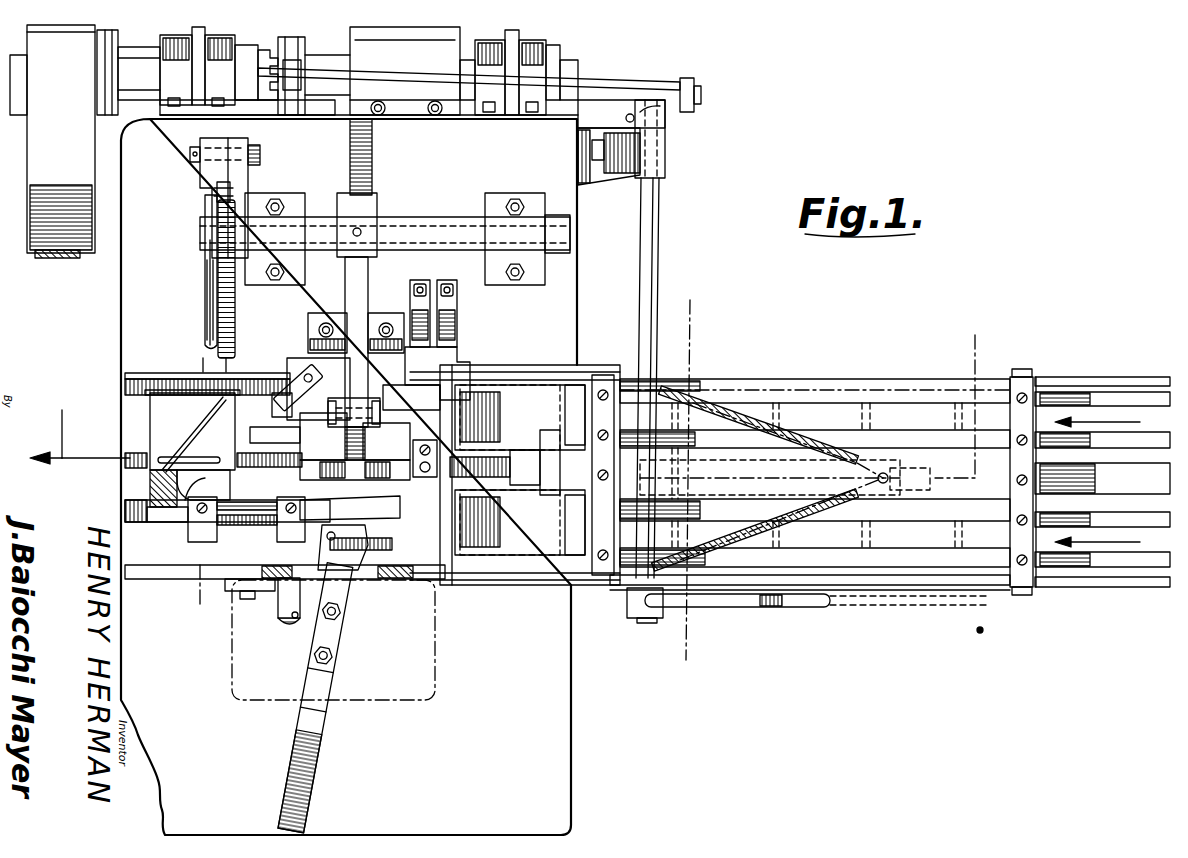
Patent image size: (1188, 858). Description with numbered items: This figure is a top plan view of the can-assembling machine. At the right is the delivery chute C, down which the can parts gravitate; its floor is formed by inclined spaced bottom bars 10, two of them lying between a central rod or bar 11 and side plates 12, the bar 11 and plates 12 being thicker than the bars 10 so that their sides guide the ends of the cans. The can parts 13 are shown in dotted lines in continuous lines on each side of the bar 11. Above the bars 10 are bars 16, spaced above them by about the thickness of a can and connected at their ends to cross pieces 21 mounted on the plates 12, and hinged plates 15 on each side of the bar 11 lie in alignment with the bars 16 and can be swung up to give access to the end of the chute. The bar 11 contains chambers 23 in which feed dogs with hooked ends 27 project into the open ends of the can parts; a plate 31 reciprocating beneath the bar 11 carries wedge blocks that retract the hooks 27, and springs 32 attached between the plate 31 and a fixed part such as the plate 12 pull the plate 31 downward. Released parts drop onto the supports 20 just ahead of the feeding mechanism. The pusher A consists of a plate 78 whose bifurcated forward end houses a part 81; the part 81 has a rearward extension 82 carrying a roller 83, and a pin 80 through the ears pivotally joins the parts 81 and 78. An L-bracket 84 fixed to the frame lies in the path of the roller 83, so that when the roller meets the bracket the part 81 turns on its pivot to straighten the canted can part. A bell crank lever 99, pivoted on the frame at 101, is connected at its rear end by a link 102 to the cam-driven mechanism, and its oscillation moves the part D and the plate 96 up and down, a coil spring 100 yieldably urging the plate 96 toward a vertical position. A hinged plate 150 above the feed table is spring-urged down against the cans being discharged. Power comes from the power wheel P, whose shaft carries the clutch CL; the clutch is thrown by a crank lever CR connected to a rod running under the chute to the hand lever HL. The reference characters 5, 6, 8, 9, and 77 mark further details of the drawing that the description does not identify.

The supports 20 is at (142, 296).
The power wheel P is at (42, 128).
The drive shaft 9 is at (139, 73).
The clutch CL is at (265, 108).
The crank lever CR is at (615, 90).
The frame 5 is at (350, 52).
The bell crank lever 99 is at (360, 305).
The pivot 101 is at (422, 232).
The link 102 is at (210, 152).
The chambers 23 is at (209, 409).
The can parts 13 is at (162, 408).
The part D is at (300, 409).
The plate 96 is at (378, 400).
The coil spring 100 is at (368, 451).
The hinged plate 150 is at (248, 510).
The pin 80 is at (328, 520).
The part 81 is at (379, 538).
The L-bracket 84 is at (268, 570).
The pusher A is at (360, 600).
The plate 78 is at (345, 628).
The bolt 77 is at (340, 658).
The extension 82 is at (302, 582).
The roller 83 is at (304, 625).
The hinged plates 15 is at (512, 400).
The cross pieces 21 is at (603, 570).
The bars 16 is at (848, 395).
The plate 31 is at (800, 445).
The springs 32 is at (750, 405).
The hooked ends 27 is at (668, 462).
The section line 8 is at (686, 484).
The section line 6 is at (506, 396).
The side plates 12 is at (1090, 378).
The bottom bars 10 is at (1040, 438).
The central bar 11 is at (1102, 478).
The chute C is at (1163, 376).
The hand lever HL is at (756, 618).